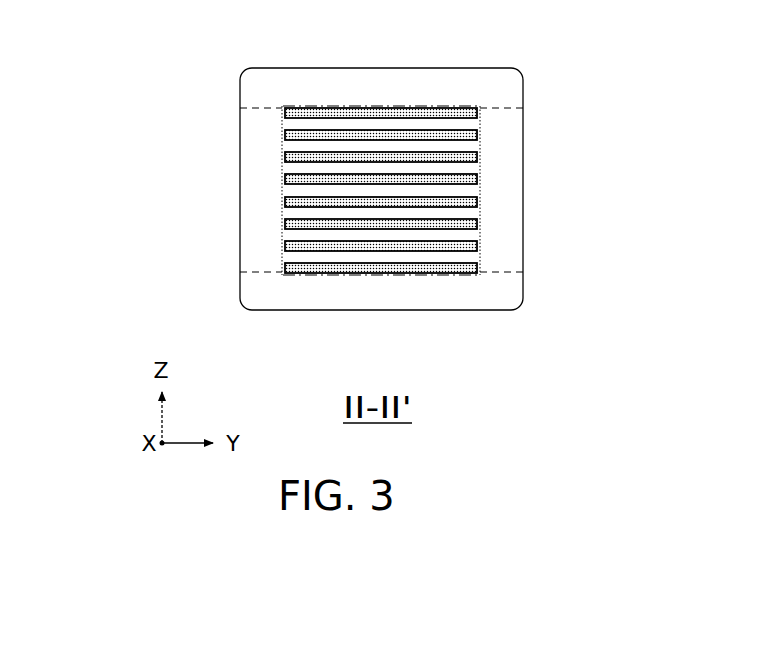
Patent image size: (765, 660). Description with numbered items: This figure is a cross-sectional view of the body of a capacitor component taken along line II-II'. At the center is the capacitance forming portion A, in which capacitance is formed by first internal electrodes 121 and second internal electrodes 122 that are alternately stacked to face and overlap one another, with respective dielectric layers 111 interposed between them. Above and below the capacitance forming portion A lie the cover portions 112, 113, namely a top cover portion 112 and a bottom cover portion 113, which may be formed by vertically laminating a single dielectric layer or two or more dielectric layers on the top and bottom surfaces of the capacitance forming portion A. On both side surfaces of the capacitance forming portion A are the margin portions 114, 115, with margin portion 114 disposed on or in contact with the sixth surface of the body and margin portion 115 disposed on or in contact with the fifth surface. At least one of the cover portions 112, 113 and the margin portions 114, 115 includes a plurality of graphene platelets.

The dielectric layer 111 is at (313, 128).
The top cover portion 112 is at (368, 90).
The bottom cover portion 113 is at (370, 297).
The margin portion 114 is at (260, 192).
The margin portion 115 is at (505, 197).
The first internal electrode 121 is at (430, 110).
The second internal electrode 122 is at (460, 132).
The capacitance forming portion A is at (274, 149).